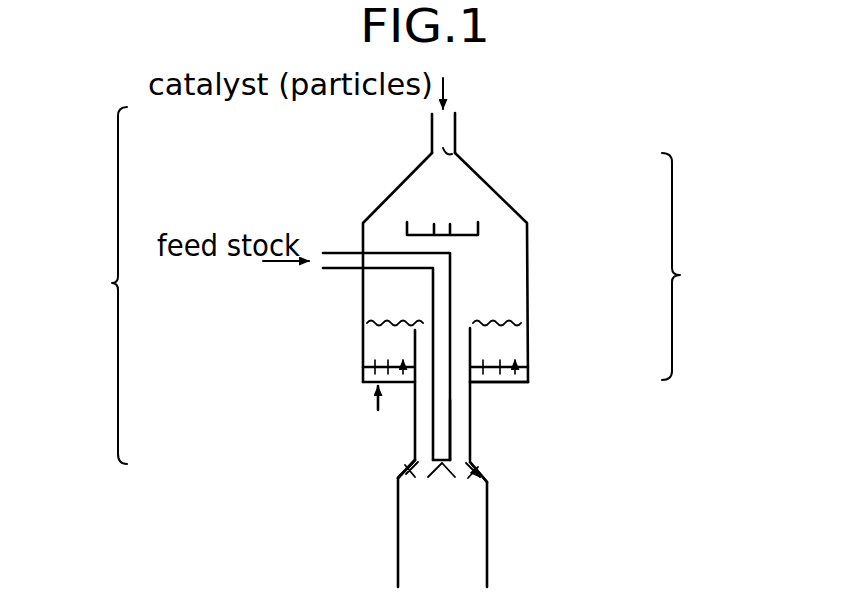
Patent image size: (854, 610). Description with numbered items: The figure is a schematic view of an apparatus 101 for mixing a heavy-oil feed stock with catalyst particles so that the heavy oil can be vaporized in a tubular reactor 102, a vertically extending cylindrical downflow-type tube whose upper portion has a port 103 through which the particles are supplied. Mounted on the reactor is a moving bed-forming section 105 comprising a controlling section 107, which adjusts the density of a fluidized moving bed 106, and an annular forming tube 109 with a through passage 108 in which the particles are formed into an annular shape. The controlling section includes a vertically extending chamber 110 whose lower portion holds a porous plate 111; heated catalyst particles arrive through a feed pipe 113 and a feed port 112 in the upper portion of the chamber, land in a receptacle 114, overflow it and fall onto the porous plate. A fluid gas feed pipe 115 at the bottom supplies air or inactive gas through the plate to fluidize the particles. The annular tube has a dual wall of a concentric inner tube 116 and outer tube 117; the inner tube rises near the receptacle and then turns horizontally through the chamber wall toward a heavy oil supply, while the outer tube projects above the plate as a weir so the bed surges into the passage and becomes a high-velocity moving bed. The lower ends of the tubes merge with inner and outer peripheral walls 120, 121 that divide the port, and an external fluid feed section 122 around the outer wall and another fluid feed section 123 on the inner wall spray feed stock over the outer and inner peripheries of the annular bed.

The apparatus 101 is at (578, 212).
The tubular reactor 102 is at (488, 532).
The port 103 is at (462, 453).
The moving bed-forming section 105 is at (97, 285).
The moving bed 106 is at (515, 343).
The controlling section 107 is at (694, 266).
The through passage 108 is at (462, 412).
The annular forming tube 109 is at (411, 432).
The chamber 110 is at (363, 300).
The porous plate 111 is at (368, 368).
The feed port 112 is at (455, 155).
The feed pipe 113 is at (455, 129).
The receptacle 114 is at (478, 229).
The fluid gas feed pipe 115 is at (372, 392).
The inner tube 116 is at (450, 392).
The outer tube 117 is at (472, 430).
The inner peripheral wall 120 is at (433, 462).
The outer peripheral wall 121 is at (476, 462).
The external fluid feed section 122 is at (391, 484).
The fluid feed section 123 is at (438, 480).